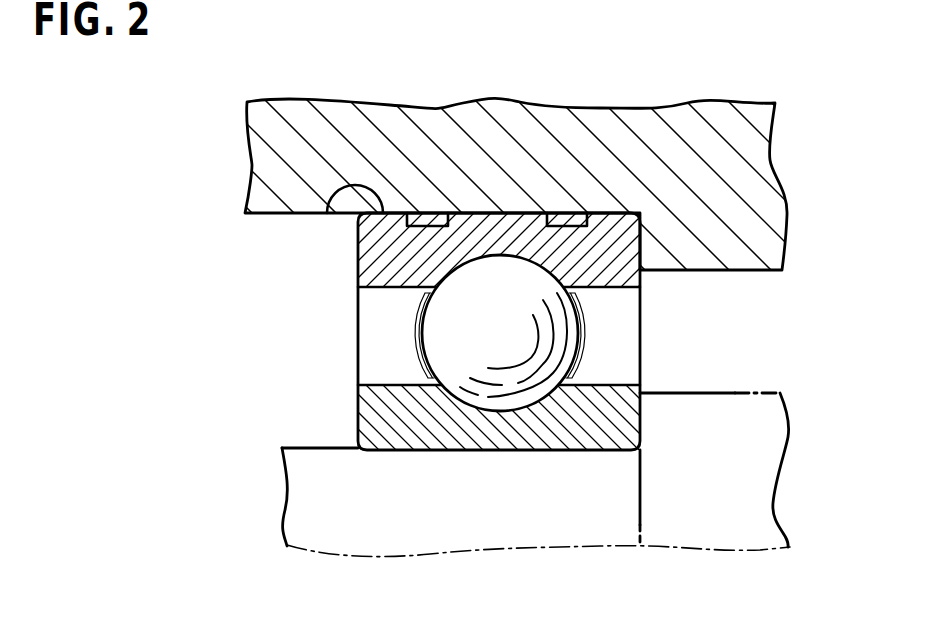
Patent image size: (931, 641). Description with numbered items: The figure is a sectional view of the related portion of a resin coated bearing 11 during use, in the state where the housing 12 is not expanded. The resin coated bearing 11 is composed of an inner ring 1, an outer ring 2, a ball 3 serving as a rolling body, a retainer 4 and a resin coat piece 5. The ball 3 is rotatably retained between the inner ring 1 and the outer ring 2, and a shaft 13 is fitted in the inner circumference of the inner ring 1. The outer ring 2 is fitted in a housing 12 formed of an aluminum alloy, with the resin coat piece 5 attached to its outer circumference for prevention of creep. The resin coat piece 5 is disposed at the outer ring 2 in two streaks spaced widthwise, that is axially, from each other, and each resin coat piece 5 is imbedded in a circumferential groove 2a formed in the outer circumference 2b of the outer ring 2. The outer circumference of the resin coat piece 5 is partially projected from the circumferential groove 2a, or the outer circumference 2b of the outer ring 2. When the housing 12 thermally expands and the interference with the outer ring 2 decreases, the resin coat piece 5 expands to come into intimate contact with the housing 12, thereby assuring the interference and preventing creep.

The inner ring 1 is at (543, 450).
The outer ring 2 is at (382, 275).
The circumferential groove 2a is at (424, 213).
The outer circumference 2b is at (328, 211).
The ball 3 is at (467, 352).
The retainer 4 is at (580, 338).
The resin coat piece 5 is at (562, 213).
The resin coated bearing 11 is at (657, 298).
The housing 12 is at (296, 118).
The shaft 13 is at (407, 530).